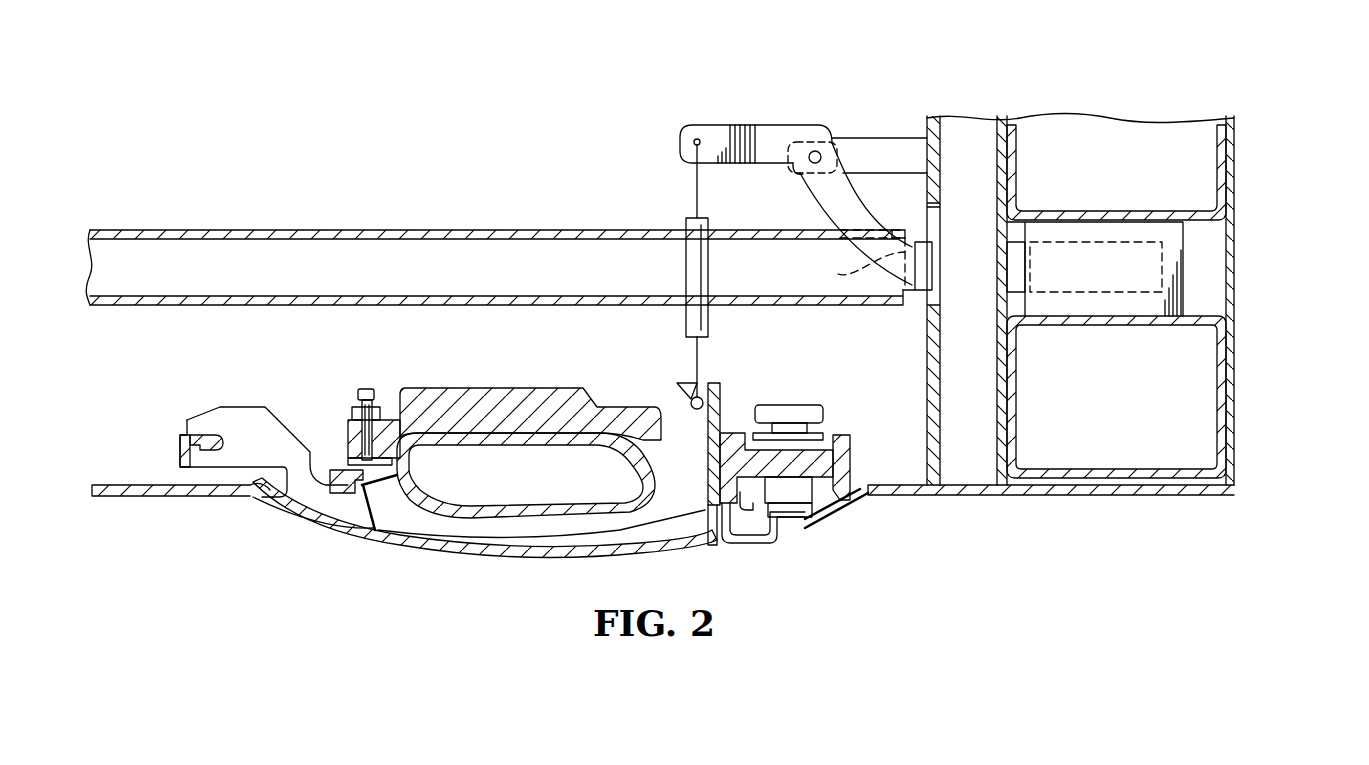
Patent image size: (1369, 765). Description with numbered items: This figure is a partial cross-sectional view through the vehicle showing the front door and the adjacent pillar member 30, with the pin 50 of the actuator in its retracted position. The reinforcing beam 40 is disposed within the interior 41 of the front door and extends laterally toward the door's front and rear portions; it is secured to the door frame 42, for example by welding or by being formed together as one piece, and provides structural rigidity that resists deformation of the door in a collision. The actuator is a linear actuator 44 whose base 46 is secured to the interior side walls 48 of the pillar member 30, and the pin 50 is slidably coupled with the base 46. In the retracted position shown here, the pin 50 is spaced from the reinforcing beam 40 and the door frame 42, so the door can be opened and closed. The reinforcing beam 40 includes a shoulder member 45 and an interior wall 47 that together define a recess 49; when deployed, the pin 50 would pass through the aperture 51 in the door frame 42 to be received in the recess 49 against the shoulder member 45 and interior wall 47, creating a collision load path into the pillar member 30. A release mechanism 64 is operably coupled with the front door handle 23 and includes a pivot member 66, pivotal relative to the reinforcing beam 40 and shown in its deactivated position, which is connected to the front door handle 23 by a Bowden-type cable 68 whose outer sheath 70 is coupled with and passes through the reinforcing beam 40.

The front door handle 23 is at (465, 546).
The pillar member 30 is at (1240, 452).
The reinforcing beam 40 is at (378, 230).
The interior 41 is at (852, 393).
The door frame 42 is at (948, 478).
The linear actuator 44 is at (1184, 265).
The shoulder member 45 is at (915, 306).
The base 46 is at (1158, 225).
The interior wall 47 is at (857, 260).
The interior side walls 48 is at (1092, 214).
The recess 49 is at (930, 272).
The pin 50 is at (1003, 265).
The aperture 51 is at (945, 210).
The release mechanism 64 is at (790, 160).
The pivot member 66 is at (778, 132).
The cable 68 is at (669, 274).
The outer sheath 70 is at (688, 322).